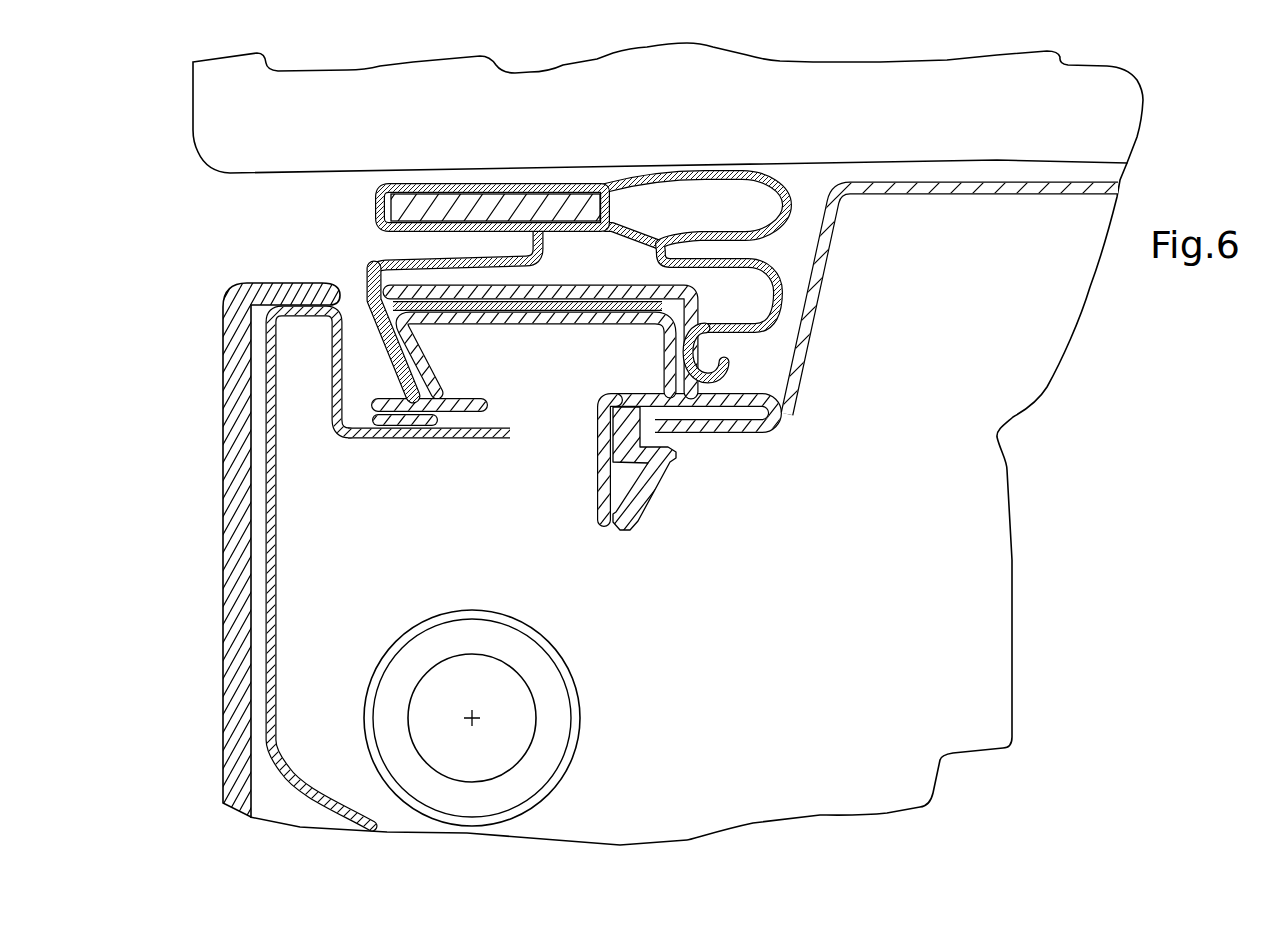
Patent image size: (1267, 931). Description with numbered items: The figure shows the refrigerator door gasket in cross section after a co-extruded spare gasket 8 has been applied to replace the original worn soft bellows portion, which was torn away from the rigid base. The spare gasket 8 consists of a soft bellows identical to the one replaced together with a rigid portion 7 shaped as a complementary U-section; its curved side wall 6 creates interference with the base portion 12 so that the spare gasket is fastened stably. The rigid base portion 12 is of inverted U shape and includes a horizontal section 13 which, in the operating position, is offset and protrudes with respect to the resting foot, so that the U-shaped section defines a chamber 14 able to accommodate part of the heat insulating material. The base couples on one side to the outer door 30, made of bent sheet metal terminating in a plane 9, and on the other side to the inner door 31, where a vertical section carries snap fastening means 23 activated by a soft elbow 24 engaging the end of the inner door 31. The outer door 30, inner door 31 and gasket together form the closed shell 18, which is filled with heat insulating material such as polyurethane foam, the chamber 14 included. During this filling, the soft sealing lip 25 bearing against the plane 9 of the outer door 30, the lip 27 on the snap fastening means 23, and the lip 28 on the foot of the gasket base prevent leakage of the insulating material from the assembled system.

The curved side wall 6 is at (712, 362).
The rigid portion 7 is at (590, 286).
The co-extruded spare gasket 8 is at (354, 256).
The plane 9 is at (495, 440).
The base portion 12 is at (526, 323).
The horizontal section 13 is at (604, 322).
The chamber 14 is at (561, 437).
The shell 18 is at (559, 502).
The snap fastening means 23 is at (656, 485).
The elbow 24 is at (633, 535).
The sealing lip 25 is at (410, 422).
The lip 27 is at (703, 410).
The lip 28 is at (768, 422).
The outer door 30 is at (280, 573).
The inner door 31 is at (818, 297).